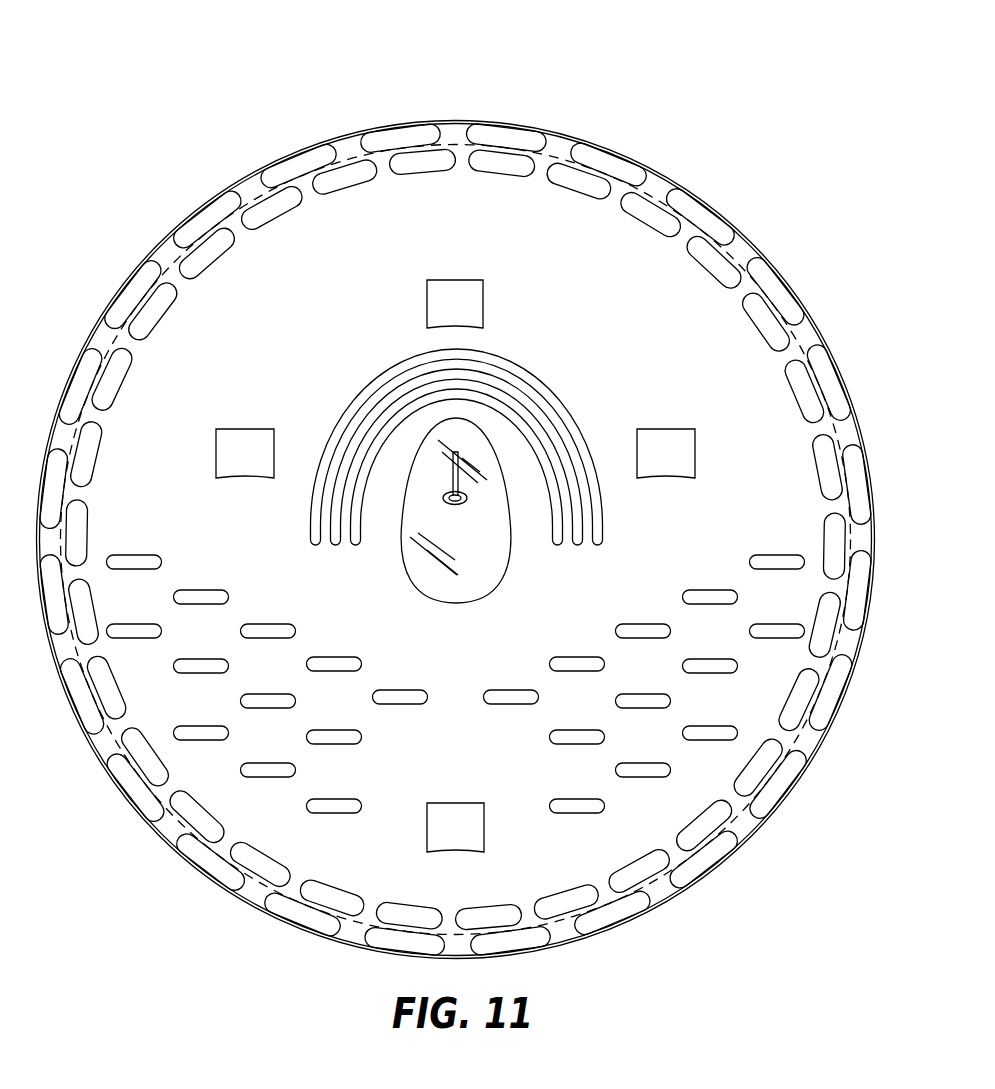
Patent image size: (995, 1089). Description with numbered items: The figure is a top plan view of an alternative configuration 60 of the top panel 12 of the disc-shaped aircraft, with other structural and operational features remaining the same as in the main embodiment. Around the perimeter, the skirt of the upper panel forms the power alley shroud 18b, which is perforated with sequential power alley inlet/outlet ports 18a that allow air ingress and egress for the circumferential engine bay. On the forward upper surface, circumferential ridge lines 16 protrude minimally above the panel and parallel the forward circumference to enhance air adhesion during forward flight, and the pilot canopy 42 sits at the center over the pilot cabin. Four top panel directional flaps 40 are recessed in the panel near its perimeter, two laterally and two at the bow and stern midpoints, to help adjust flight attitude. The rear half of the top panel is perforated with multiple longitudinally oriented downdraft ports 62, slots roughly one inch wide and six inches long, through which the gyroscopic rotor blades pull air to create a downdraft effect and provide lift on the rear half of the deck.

The alternative embodiment with downdraft ports 60 is at (194, 80).
The top panel 12 is at (622, 240).
The power alley inlet/outlet ports 18a is at (482, 162).
The power alley shroud 18b is at (805, 748).
The top panel directional flaps 40 is at (444, 288).
The top panel circumferential ridge lines 16 is at (517, 371).
The pilot canopy 42 is at (492, 557).
The downdraft ports 62 is at (241, 702).